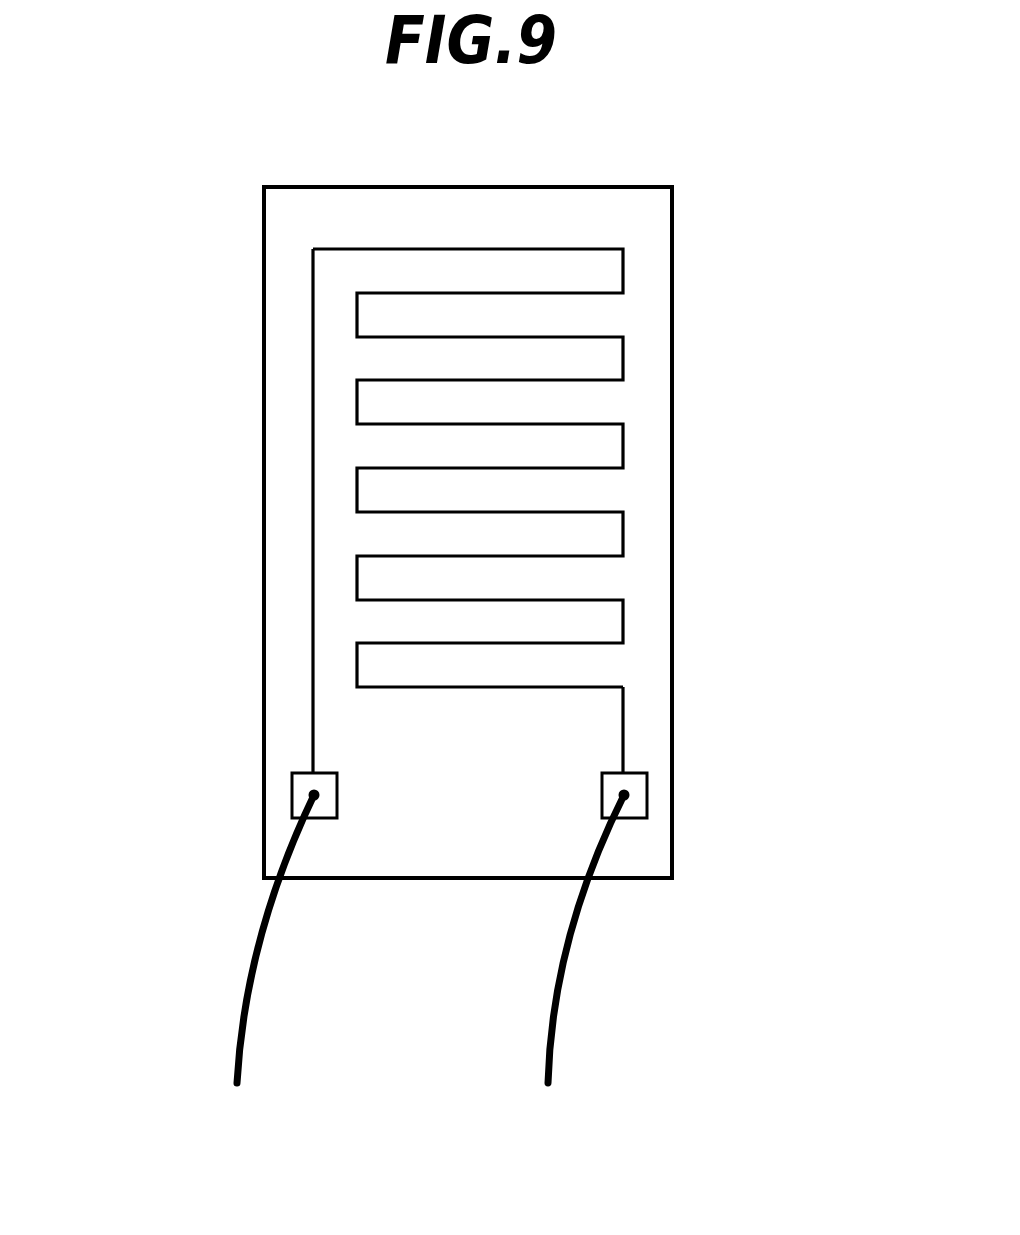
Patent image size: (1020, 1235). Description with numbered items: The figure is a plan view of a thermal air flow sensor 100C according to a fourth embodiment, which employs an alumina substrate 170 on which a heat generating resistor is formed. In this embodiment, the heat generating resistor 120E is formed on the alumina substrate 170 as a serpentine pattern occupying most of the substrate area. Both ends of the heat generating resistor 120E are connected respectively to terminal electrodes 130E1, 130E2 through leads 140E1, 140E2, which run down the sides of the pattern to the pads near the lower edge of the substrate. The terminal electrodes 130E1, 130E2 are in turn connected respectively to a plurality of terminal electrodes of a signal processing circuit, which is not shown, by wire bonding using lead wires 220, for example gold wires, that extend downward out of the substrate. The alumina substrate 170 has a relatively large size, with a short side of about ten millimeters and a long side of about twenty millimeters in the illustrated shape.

The thermal air flow sensor 100C is at (910, 375).
The alumina substrate 170 is at (650, 293).
The heat generating resistor 120E is at (553, 248).
The lead 140E1 is at (313, 689).
The lead 140E2 is at (625, 723).
The terminal electrode 130E1 is at (300, 787).
The terminal electrode 130E2 is at (638, 798).
The lead wire 220 is at (248, 1037).